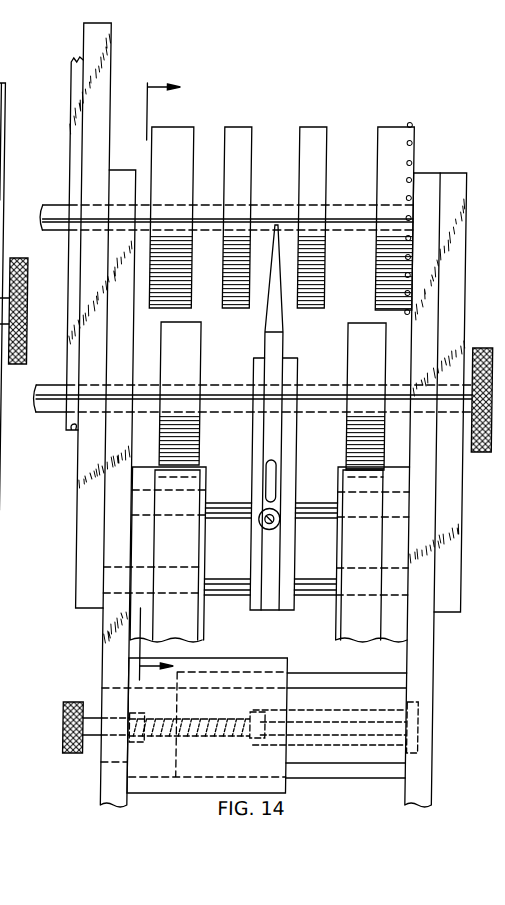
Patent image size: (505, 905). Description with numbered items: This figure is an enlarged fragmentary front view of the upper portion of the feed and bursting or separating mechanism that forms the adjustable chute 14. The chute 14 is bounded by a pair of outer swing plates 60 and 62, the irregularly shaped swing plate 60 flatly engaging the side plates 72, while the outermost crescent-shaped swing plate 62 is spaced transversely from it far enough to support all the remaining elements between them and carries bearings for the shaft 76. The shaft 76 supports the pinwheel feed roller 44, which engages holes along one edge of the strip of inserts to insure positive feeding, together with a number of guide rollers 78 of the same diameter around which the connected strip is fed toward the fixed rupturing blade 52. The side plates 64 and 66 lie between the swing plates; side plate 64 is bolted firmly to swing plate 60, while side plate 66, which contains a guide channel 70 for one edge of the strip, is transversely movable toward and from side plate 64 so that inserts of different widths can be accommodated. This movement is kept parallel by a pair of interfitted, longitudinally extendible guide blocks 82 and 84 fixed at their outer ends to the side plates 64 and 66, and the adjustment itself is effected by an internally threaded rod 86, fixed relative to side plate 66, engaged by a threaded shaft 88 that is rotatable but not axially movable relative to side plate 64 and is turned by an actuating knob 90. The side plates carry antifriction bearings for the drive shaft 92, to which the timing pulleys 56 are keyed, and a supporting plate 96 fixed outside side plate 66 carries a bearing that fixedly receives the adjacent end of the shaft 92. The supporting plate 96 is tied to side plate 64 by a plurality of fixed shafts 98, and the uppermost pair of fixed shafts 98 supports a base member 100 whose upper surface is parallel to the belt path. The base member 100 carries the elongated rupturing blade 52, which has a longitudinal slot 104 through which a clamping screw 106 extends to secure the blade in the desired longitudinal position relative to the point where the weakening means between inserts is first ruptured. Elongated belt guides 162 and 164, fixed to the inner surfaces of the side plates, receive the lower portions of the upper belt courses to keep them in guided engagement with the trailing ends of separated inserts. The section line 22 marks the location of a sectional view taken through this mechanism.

The adjustable chute 14 is at (105, 675).
The section line 22 is at (147, 377).
The feed roller 44 is at (383, 127).
The rupturing blade 52 is at (279, 345).
The timing pulleys 56 is at (198, 430).
The swing plate 60 is at (88, 502).
The swing plate 62 is at (3, 95).
The side plate 64 is at (111, 642).
The side plate 66 is at (0, 169).
The guide channel 70 is at (0, 58).
The side plates 72 is at (67, 430).
The shaft 76 is at (262, 205).
The guide rollers 78 is at (168, 127).
The guide block 82 is at (211, 663).
The guide block 84 is at (326, 680).
The internally threaded rod 86 is at (328, 745).
The threaded shaft 88 is at (200, 722).
The actuating knob 90 is at (27, 305).
The shaft 92 is at (218, 392).
The supporting plate 96 is at (448, 593).
The fixed shafts 98 is at (235, 512).
The base member 100 is at (285, 544).
The slot 104 is at (276, 470).
The clamping screw 106 is at (285, 522).
The belt guide 162 is at (200, 548).
The belt guide 164 is at (333, 605).